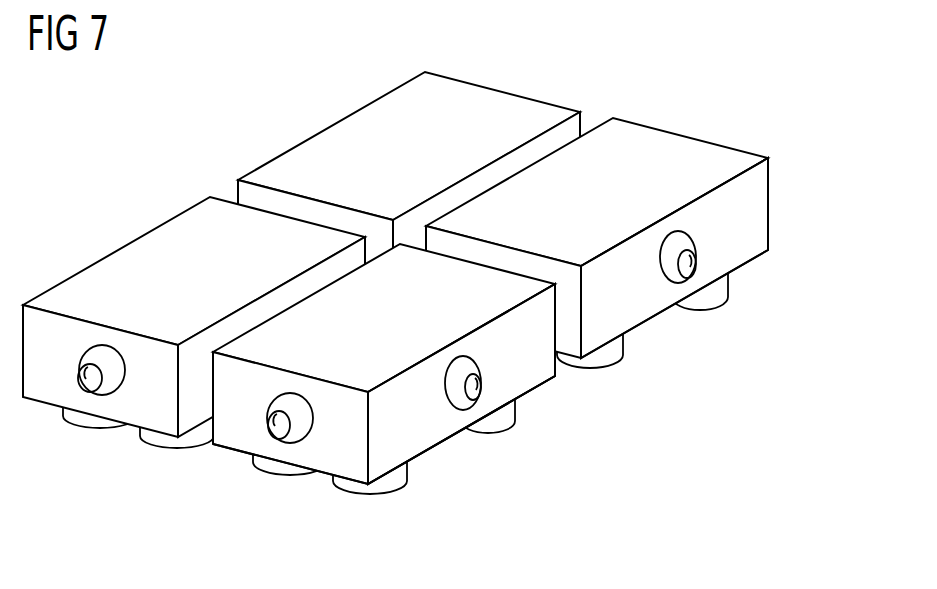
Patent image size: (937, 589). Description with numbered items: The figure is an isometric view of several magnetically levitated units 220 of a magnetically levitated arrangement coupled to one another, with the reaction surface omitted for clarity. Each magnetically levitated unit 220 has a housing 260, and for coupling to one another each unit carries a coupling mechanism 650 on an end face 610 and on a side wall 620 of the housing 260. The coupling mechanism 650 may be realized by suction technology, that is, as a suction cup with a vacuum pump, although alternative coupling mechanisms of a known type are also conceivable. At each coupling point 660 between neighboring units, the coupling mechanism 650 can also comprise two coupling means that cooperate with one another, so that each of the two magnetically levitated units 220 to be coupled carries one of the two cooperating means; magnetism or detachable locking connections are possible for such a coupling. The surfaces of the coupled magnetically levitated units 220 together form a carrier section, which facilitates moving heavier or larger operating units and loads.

The magnetically levitated unit 220 is at (557, 82).
The housing 260 is at (722, 253).
The end face 610 is at (322, 463).
The side wall 620 is at (407, 447).
The coupling mechanism 650 is at (86, 372).
The coupling point 660 is at (475, 248).